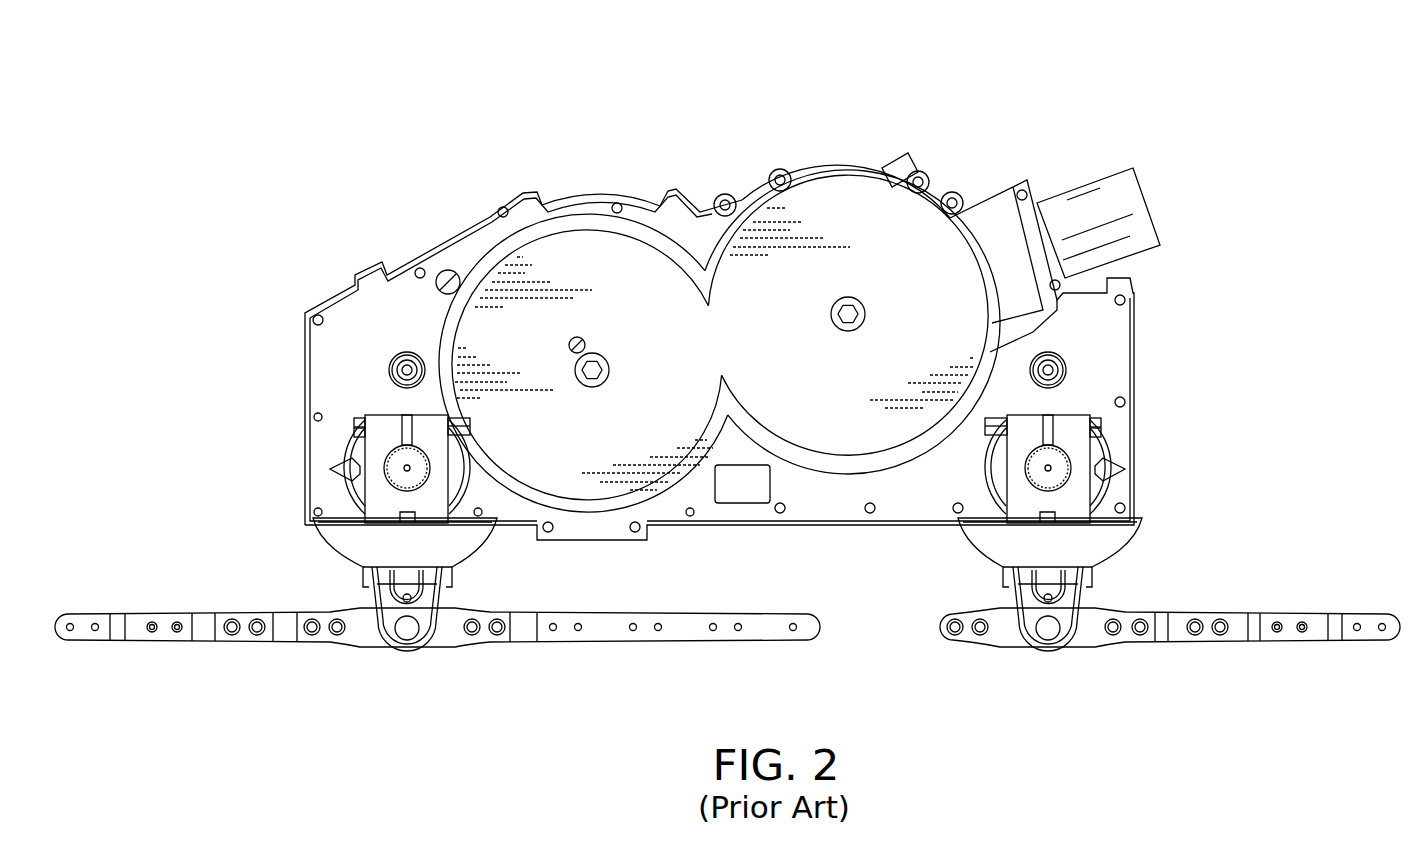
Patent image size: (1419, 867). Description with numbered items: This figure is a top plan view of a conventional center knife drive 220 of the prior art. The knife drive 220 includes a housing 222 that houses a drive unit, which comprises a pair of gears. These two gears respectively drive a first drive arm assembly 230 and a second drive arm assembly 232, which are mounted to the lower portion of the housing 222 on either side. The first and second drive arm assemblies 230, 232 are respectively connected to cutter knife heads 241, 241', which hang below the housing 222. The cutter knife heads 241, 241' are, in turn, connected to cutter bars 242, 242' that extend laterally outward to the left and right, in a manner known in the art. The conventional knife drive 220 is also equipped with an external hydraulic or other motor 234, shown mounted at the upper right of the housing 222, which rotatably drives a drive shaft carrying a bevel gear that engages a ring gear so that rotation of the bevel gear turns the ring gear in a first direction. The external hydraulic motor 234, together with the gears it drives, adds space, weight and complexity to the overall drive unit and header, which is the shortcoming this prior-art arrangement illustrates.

The knife drive 220 is at (761, 121).
The housing 222 is at (836, 167).
The first drive arm assembly 230 is at (1100, 443).
The second drive arm assembly 232 is at (366, 441).
The external hydraulic motor 234 is at (1147, 197).
The cutter knife head 241 is at (351, 584).
The cutter knife head 241' is at (1101, 584).
The cutter bar 242 is at (437, 658).
The cutter bar 242' is at (1170, 658).